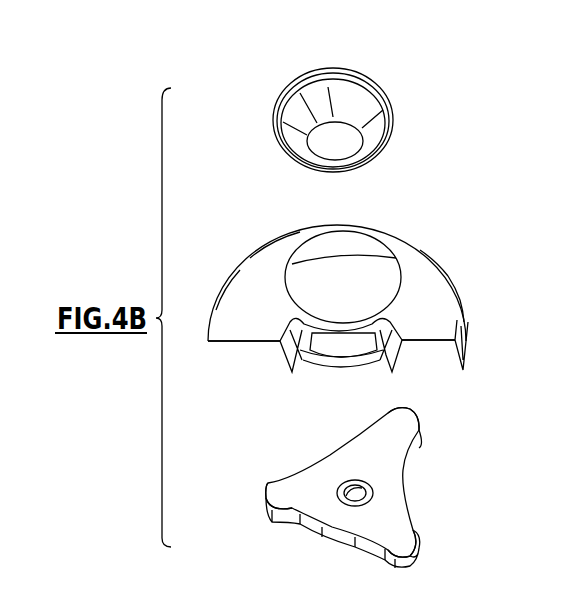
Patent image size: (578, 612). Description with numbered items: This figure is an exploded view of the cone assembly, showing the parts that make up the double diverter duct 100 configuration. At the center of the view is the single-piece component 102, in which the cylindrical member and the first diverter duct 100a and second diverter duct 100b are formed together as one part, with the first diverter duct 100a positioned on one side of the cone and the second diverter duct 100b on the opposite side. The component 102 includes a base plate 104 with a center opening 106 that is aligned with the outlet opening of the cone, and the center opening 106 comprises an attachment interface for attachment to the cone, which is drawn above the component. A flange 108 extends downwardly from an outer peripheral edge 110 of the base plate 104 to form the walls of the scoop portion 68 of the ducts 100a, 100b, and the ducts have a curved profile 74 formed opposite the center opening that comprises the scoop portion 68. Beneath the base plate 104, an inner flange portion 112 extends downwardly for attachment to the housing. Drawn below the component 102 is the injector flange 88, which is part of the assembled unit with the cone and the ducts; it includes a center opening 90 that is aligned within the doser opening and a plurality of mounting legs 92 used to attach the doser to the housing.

The scoop portion 68 is at (222, 323).
The curved profile 74 is at (229, 282).
The injector flange 88 is at (402, 497).
The center opening 90 is at (346, 497).
The mounting legs 92 is at (419, 425).
The double diverter duct 100 is at (446, 238).
The first diverter duct 100a is at (249, 342).
The second diverter duct 100b is at (430, 342).
The single-piece component 102 is at (457, 287).
The base plate 104 is at (263, 252).
The center opening 106 is at (378, 266).
The flange 108 is at (466, 349).
The outer peripheral edge 110 is at (462, 307).
The inner flange portion 112 is at (302, 367).